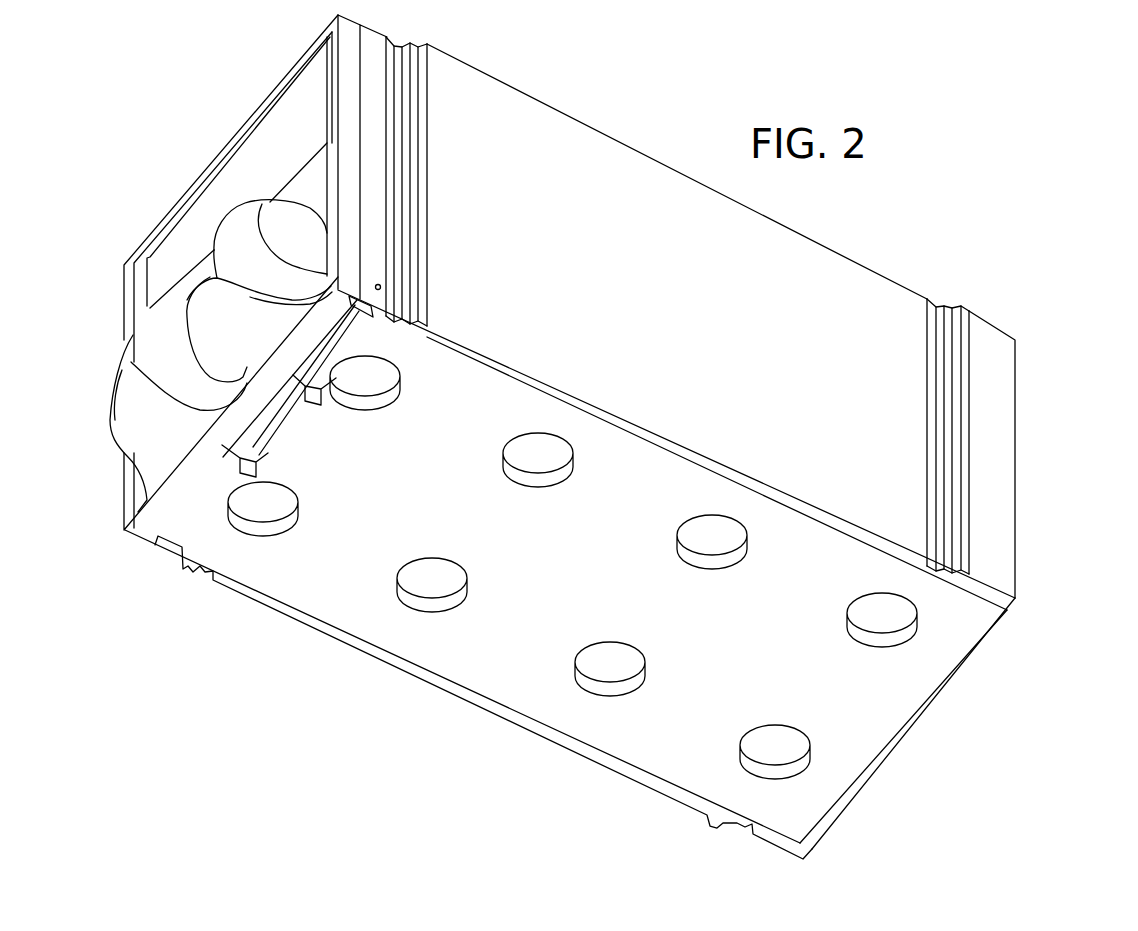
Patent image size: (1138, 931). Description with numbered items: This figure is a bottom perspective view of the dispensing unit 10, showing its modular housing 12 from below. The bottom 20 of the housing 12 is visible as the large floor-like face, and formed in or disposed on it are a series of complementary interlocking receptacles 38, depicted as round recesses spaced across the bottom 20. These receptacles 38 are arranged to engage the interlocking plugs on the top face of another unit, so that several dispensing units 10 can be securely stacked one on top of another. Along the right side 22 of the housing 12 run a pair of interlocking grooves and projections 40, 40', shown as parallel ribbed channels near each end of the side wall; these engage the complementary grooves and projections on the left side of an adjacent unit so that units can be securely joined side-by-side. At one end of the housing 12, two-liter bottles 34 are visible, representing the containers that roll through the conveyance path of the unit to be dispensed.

The dispensing unit 10 is at (1042, 267).
The housing 12 is at (1018, 455).
The bottom 20 is at (592, 585).
The right side 22 is at (690, 338).
The two-liter bottles 34 is at (194, 360).
The interlocking receptacles 38 is at (910, 630).
The interlocking grooves and projections 40 is at (450, 179).
The interlocking grooves and projections 40' is at (959, 405).